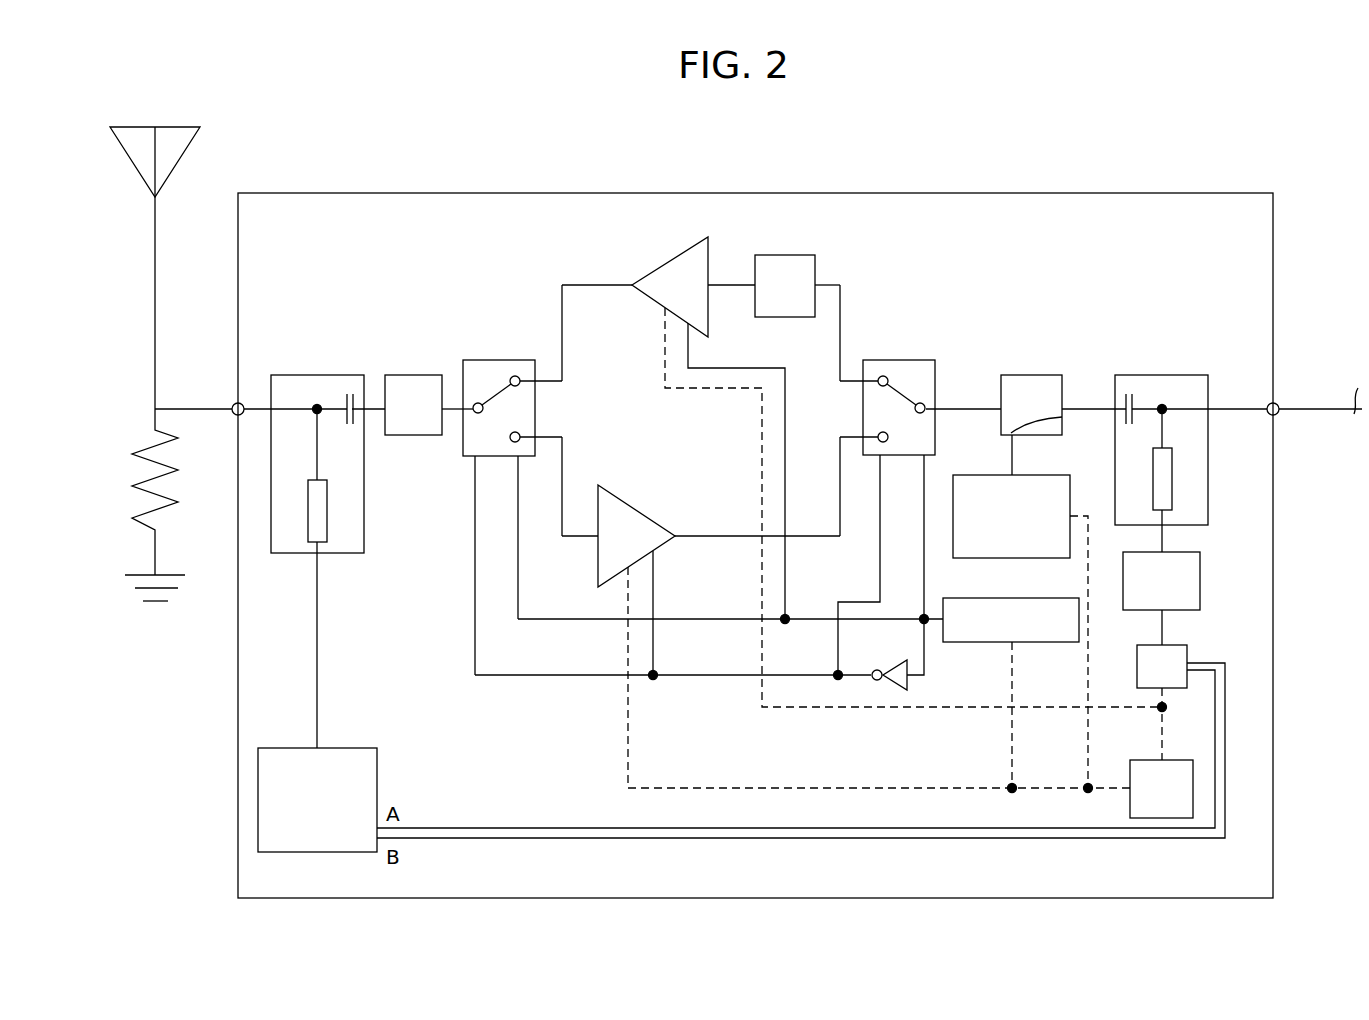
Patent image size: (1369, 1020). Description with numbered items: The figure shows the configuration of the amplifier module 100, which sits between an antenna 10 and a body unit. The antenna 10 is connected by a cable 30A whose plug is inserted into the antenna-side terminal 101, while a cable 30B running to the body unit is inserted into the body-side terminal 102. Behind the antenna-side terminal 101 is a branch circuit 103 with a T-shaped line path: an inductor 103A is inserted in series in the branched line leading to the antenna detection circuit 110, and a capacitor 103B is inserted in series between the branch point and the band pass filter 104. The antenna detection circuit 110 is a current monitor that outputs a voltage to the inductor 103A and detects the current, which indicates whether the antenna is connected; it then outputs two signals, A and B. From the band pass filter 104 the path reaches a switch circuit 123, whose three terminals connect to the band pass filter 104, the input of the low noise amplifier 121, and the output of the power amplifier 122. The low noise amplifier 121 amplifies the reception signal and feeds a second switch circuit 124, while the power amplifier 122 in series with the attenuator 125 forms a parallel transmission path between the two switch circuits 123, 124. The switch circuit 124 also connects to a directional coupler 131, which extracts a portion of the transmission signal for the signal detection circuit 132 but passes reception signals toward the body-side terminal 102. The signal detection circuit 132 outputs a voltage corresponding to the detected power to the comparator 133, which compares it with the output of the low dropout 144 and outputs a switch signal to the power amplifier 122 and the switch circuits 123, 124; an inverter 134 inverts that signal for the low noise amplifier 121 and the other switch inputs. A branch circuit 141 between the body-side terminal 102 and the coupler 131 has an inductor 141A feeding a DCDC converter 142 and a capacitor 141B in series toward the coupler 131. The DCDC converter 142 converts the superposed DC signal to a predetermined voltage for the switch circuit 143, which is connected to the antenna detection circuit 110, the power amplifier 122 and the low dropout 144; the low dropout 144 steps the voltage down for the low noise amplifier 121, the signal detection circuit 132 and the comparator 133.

The antenna 10 is at (178, 126).
The cable 30A is at (172, 407).
The cable 30B is at (1318, 412).
The amplifier module 100 is at (1278, 158).
The antenna-side terminal 101 is at (233, 403).
The body-side terminal 102 is at (1280, 403).
The branch circuit 103 is at (352, 460).
The inductor 103A is at (328, 510).
The capacitor 103B is at (348, 392).
The band pass filter 104 is at (411, 374).
The antenna detection circuit 110 is at (335, 748).
The low noise amplifier 121 is at (632, 510).
The power amplifier 122 is at (666, 263).
The switch circuit 123 is at (496, 359).
The switch circuit 124 is at (900, 359).
The attenuator 125 is at (790, 255).
The directional coupler 131 is at (1032, 374).
The signal detection circuit 132 is at (1032, 474).
The comparator 133 is at (1000, 597).
The inverter 134 is at (890, 665).
The branch circuit 141 is at (1189, 445).
The inductor 141A is at (1175, 473).
The capacitor 141B is at (1128, 392).
The DCDC converter 142 is at (1190, 611).
The switch circuit 143 is at (1150, 645).
The low dropout 144 is at (1150, 760).